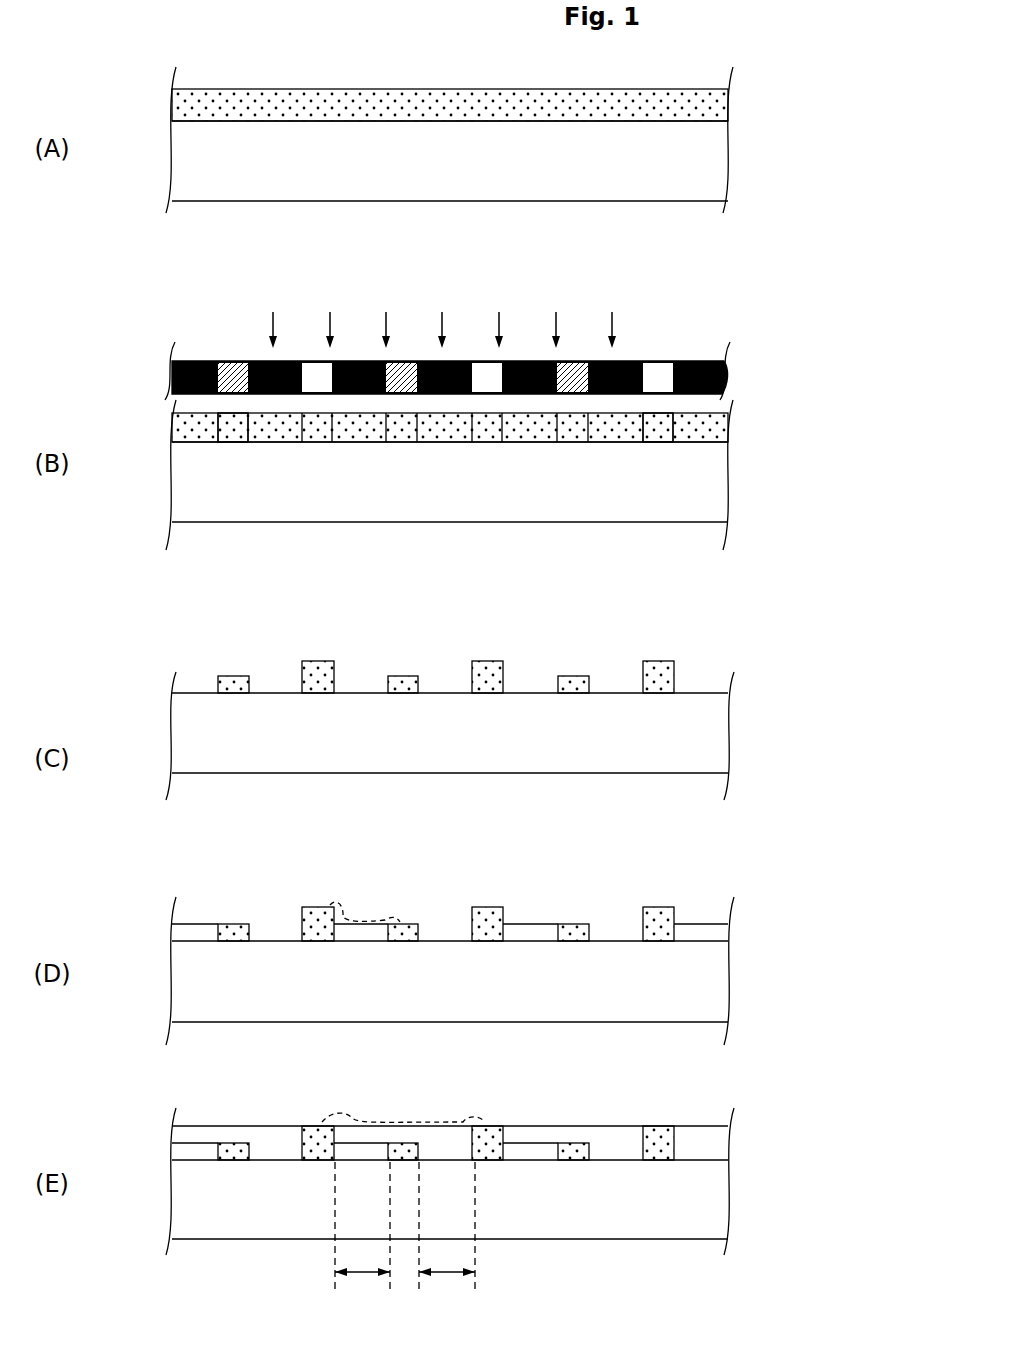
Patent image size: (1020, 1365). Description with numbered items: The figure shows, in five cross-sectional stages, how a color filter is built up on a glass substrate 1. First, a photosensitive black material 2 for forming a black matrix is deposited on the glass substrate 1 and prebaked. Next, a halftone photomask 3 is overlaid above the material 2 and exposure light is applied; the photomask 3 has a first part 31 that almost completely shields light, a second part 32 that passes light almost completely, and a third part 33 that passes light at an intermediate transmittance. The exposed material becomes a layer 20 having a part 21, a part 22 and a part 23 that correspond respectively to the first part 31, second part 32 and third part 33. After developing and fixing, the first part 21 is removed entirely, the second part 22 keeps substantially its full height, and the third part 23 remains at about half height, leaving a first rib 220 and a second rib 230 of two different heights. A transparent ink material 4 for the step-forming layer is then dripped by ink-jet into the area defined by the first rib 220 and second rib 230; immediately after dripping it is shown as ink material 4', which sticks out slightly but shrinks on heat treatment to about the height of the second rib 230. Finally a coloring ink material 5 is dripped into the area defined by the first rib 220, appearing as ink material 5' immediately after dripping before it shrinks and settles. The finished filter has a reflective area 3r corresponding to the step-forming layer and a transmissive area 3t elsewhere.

The glass substrate 1 is at (708, 168).
The material for forming a black matrix 2 is at (708, 104).
The photomask 3 is at (490, 346).
The layer 20 is at (478, 460).
The first part of the layer 21 is at (698, 442).
The second part of the layer 22 is at (657, 442).
The third part of the layer 23 is at (227, 442).
The first part of the photomask 31 is at (695, 372).
The second part of the photomask 32 is at (655, 366).
The third part of the photomask 33 is at (228, 362).
The first rib 220 is at (657, 661).
The second rib 230 is at (573, 676).
The ink material for forming the step-forming layer 4 is at (450, 1002).
The ink material immediately after dripping 4' is at (365, 880).
The optical coloring liquid ink material 5 is at (450, 1090).
The coloring ink material immediately after dripping 5' is at (402, 1086).
The reflective area 3r is at (362, 1235).
The transmissive area 3t is at (447, 1235).